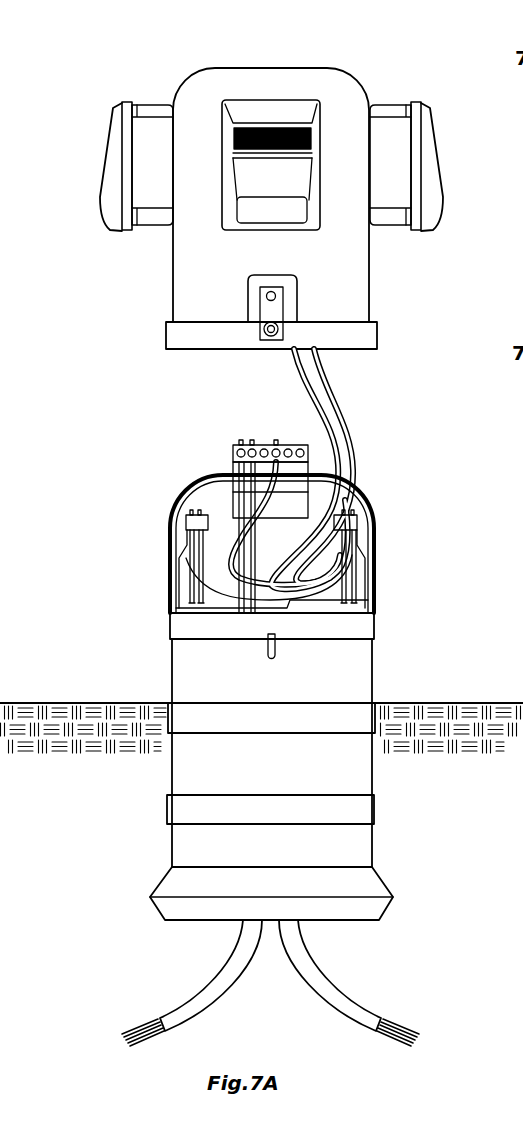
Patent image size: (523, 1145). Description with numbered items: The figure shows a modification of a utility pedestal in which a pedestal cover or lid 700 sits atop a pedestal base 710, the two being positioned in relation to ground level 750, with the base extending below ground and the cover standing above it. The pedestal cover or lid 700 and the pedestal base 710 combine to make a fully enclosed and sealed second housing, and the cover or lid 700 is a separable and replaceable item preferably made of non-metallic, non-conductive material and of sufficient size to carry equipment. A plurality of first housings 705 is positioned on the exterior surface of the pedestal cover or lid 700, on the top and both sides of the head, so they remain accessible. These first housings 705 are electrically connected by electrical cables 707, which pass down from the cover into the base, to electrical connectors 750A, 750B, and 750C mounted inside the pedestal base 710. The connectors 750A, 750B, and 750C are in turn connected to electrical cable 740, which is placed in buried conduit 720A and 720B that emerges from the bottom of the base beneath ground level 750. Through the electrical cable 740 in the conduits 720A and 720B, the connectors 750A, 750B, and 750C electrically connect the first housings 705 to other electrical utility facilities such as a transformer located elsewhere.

The pedestal cover or lid 700 is at (138, 267).
The first housings 705 is at (280, 107).
The electrical cables 707 is at (336, 388).
The pedestal base 710 is at (374, 620).
The ground level 750 is at (423, 702).
The connector 750A is at (187, 530).
The connector 750B is at (233, 448).
The connector 750C is at (352, 524).
The buried conduit 720A is at (328, 980).
The buried conduit 720B is at (217, 980).
The electrical cable 740 is at (145, 1022).